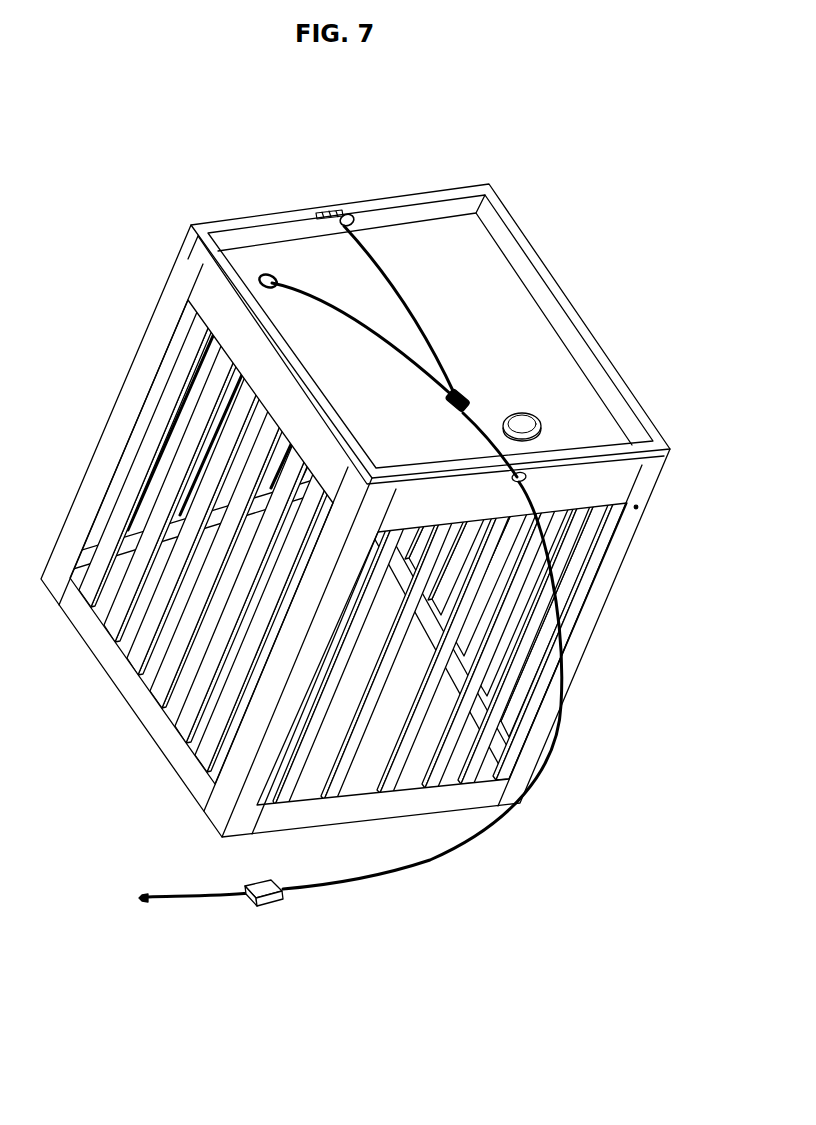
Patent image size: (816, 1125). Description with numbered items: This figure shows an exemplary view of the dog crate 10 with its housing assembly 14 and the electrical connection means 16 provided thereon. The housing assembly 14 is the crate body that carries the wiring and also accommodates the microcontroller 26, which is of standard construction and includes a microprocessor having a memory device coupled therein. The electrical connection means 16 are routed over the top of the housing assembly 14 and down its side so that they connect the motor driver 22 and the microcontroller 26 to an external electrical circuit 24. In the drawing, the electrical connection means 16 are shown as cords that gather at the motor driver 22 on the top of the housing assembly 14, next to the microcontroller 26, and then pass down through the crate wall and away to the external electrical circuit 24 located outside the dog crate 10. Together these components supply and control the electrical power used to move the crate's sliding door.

The dog crate 10 is at (188, 204).
The housing assembly 14 is at (610, 560).
The electrical connection means 16 is at (386, 341).
The motor driver 22 is at (447, 405).
The external electrical circuit 24 is at (276, 898).
The microcontroller 26 is at (472, 403).